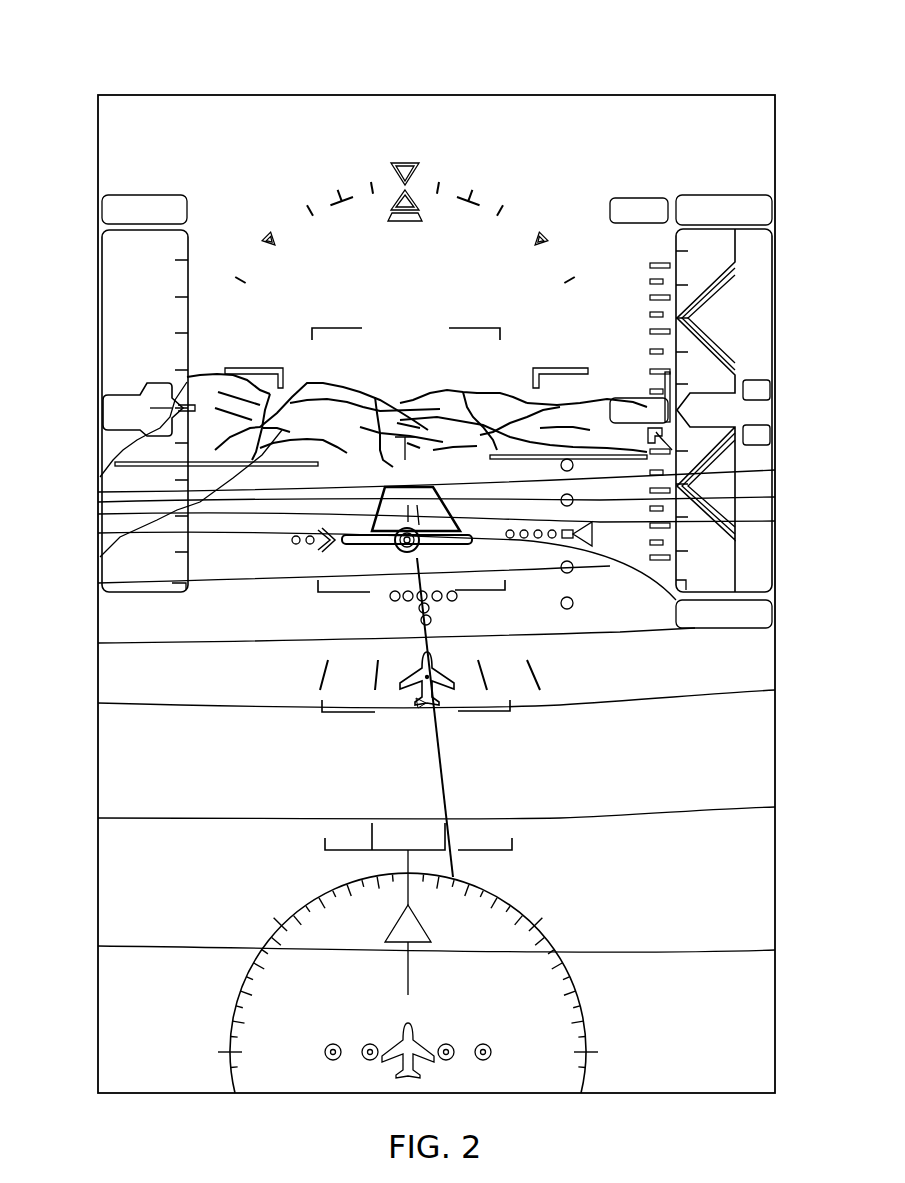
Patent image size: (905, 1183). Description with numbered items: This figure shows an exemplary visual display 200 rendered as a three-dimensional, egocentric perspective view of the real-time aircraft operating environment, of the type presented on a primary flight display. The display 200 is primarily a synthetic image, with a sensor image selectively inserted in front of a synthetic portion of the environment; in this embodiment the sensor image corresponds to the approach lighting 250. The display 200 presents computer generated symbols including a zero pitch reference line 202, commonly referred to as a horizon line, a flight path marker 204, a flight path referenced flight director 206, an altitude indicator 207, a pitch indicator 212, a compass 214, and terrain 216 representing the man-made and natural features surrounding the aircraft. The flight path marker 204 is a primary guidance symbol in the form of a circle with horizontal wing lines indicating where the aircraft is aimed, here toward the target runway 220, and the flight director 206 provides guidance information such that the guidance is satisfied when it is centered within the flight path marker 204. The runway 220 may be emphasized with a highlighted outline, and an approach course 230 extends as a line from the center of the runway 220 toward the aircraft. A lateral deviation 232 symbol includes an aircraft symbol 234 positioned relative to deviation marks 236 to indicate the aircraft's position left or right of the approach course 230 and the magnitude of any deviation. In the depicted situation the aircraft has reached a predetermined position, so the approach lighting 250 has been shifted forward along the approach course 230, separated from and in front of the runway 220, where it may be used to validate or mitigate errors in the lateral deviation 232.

The visual display 200 is at (186, 92).
The zero pitch reference line 202 is at (517, 453).
The flight path marker 204 is at (458, 530).
The flight path referenced flight director 206 is at (115, 465).
The altitude indicator 207 is at (772, 343).
The pitch indicator 212 is at (470, 327).
The compass 214 is at (295, 1078).
The terrain 216 is at (601, 705).
The target runway 220 is at (376, 506).
The approach course 230 is at (446, 782).
The lateral deviation 232 is at (412, 703).
The aircraft symbol 234 is at (452, 668).
The deviation marks 236 is at (545, 672).
The approach lighting 250 is at (398, 603).